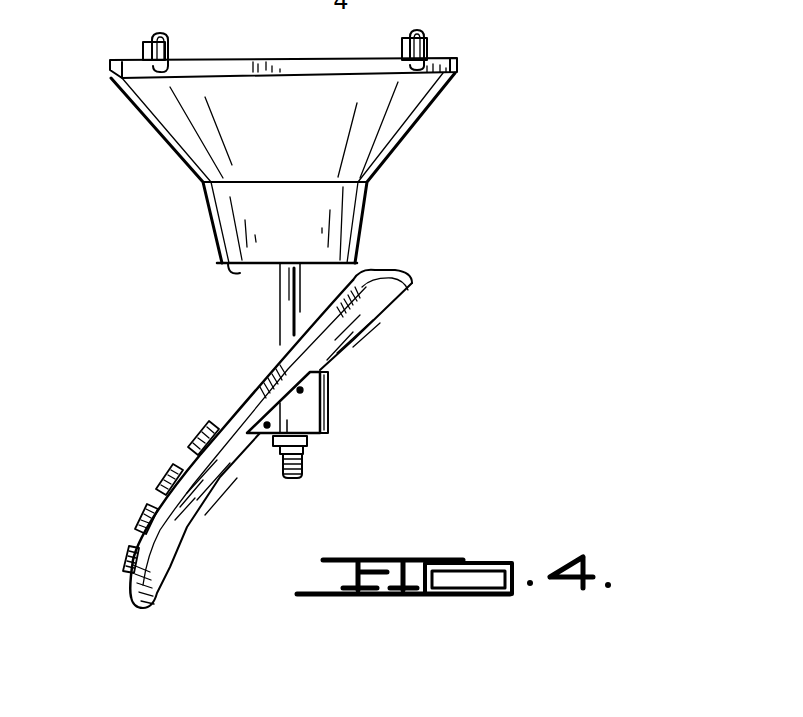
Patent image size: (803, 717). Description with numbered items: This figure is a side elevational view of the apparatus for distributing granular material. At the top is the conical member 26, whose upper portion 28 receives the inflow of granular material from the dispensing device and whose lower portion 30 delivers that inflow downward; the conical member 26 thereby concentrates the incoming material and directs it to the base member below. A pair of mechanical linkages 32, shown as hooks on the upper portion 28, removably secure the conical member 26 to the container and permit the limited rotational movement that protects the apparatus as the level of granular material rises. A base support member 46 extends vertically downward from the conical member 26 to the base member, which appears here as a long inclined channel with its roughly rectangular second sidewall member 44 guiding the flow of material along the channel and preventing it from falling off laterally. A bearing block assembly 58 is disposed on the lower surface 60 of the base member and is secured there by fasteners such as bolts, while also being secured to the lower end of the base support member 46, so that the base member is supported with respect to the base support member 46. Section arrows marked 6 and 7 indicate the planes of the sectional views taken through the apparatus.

The section line 6- 6 is at (688, 550).
The section line 7- 7 is at (200, 222).
The funnel / hopper 26 is at (419, 131).
The mounting plate 28 is at (447, 58).
The lip / flange 30 is at (238, 264).
The hanger hook 32 is at (152, 33).
The curved arm / spout 44 is at (335, 322).
The rod 46 is at (284, 295).
The bracket 58 is at (300, 415).
The tabs / serrations 60 is at (186, 503).